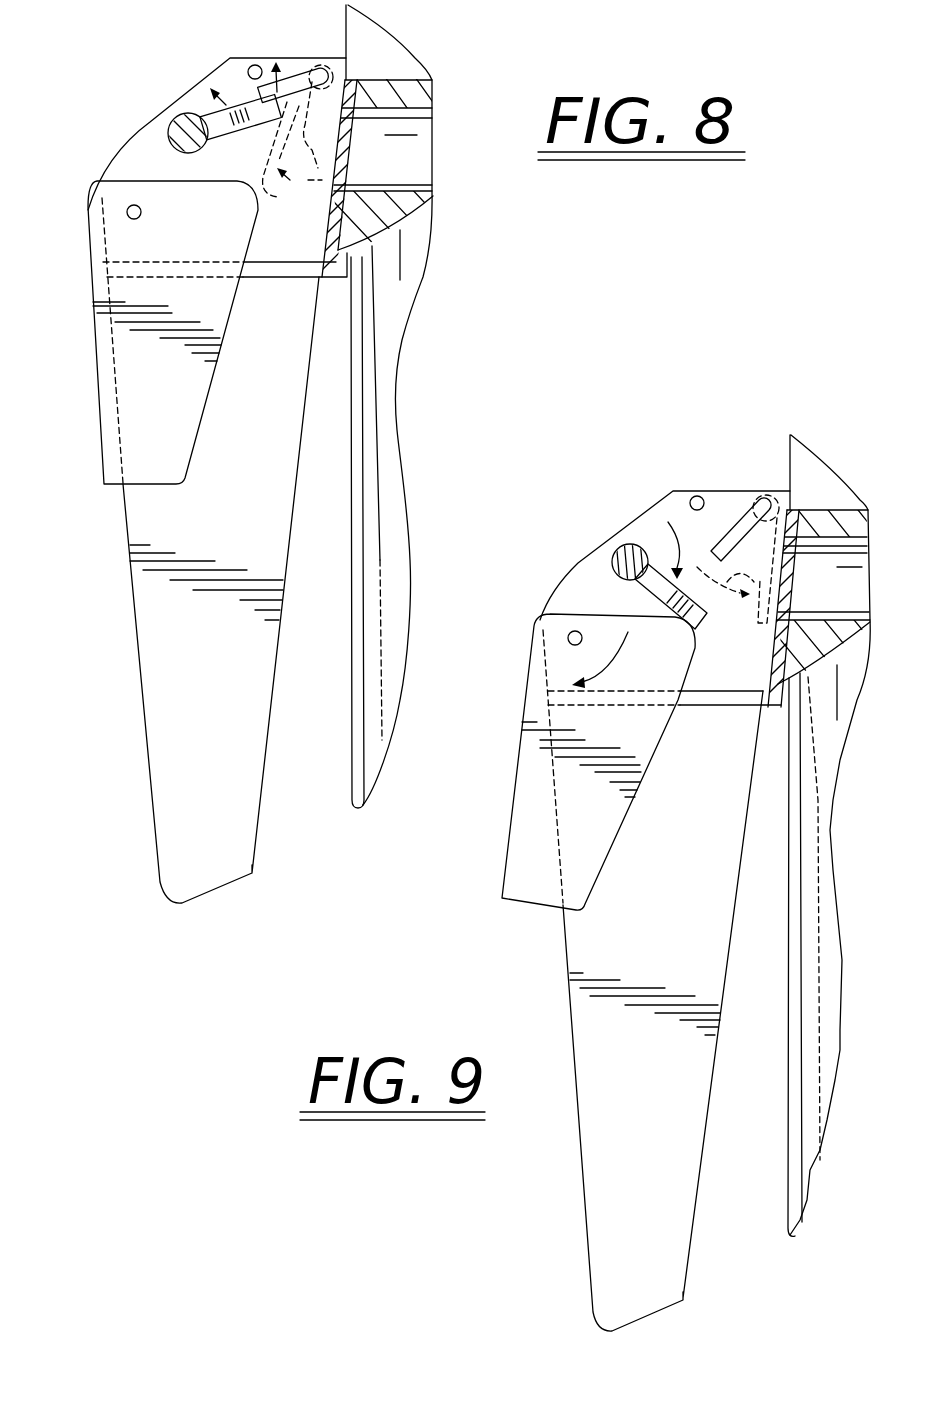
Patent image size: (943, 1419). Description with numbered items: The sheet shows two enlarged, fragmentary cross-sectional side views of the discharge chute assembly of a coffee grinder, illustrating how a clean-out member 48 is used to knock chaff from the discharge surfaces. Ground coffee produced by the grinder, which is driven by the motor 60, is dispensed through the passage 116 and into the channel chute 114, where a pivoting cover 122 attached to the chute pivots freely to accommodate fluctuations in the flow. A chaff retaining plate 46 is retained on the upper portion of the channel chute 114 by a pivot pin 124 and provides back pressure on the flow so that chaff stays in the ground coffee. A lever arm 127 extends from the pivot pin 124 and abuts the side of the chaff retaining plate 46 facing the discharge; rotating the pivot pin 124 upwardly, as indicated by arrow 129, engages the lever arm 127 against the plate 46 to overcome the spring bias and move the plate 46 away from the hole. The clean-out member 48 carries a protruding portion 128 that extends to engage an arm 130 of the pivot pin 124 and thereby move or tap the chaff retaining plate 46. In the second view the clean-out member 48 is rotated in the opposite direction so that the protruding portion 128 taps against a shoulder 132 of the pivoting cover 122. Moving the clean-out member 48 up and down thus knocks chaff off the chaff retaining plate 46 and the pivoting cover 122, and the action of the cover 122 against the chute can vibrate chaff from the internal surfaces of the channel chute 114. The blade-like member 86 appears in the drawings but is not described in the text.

In FIG. 8, the chaff retaining plate 46 is at (273, 196).
In FIG. 9, the chaff retaining plate 46 is at (725, 598).
In FIG. 8, the clean-out member 48 is at (168, 134).
In FIG. 9, the clean-out member 48 is at (628, 583).
In FIG. 8, the motor 60 is at (351, 746).
In FIG. 9, the motor 60 is at (788, 1040).
In FIG. 8, the blade 86 is at (345, 38).
In FIG. 9, the blade 86 is at (789, 455).
In FIG. 8, the channel chute 114 is at (130, 572).
In FIG. 9, the channel chute 114 is at (570, 983).
In FIG. 8, the passage 116 is at (390, 104).
In FIG. 9, the passage 116 is at (848, 513).
In FIG. 8, the pivoting cover 122 is at (96, 400).
In FIG. 9, the pivoting cover 122 is at (507, 813).
In FIG. 8, the pivot pin 124 is at (321, 64).
In FIG. 9, the pivot pin 124 is at (764, 494).
In FIG. 8, the lever arm 127 is at (283, 127).
In FIG. 9, the lever arm 127 is at (792, 562).
In FIG. 8, the protruding portion 128 is at (228, 150).
In FIG. 9, the protruding portion 128 is at (656, 592).
In FIG. 8, the arrow 129 is at (312, 118).
In FIG. 8, the arm 130 is at (256, 92).
In FIG. 9, the arm 130 is at (732, 540).
In FIG. 9, the shoulder 132 is at (697, 657).